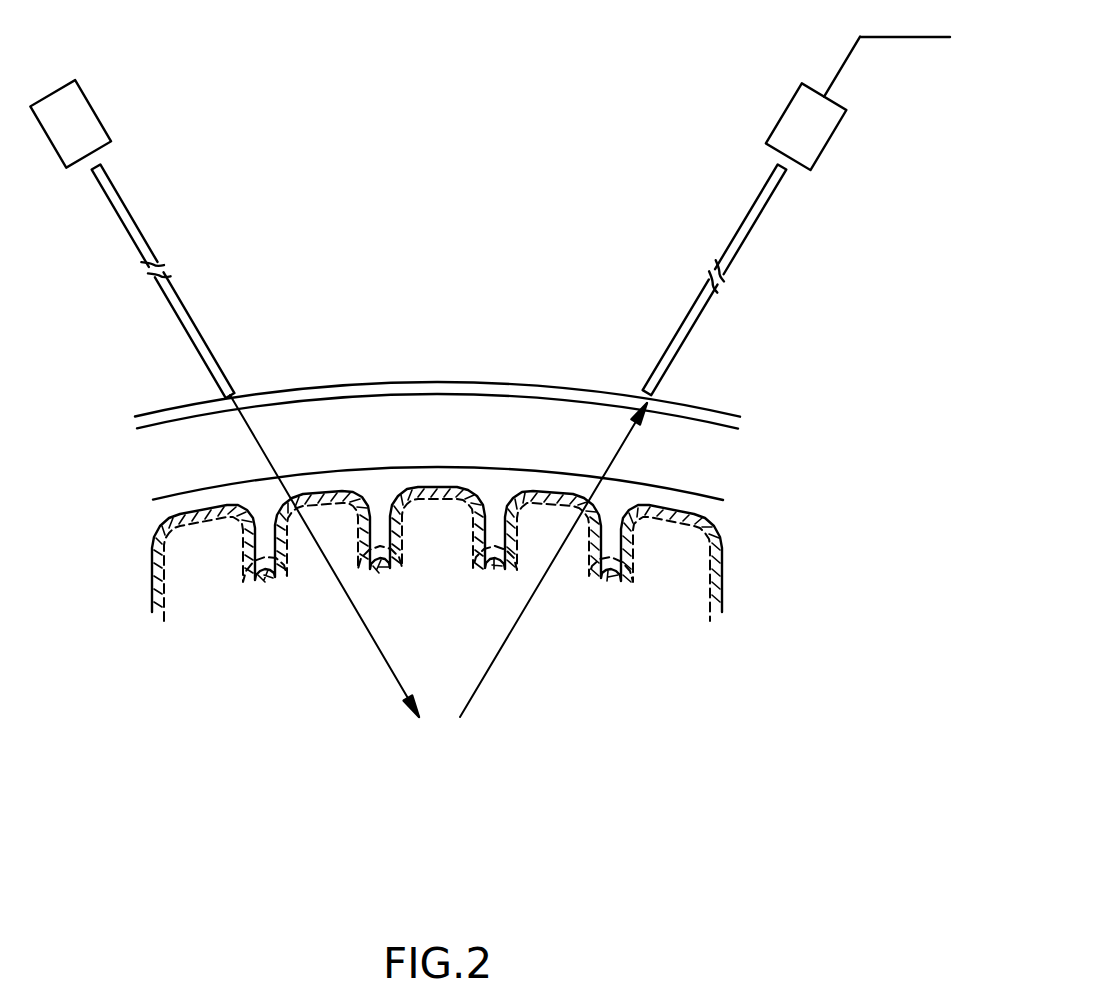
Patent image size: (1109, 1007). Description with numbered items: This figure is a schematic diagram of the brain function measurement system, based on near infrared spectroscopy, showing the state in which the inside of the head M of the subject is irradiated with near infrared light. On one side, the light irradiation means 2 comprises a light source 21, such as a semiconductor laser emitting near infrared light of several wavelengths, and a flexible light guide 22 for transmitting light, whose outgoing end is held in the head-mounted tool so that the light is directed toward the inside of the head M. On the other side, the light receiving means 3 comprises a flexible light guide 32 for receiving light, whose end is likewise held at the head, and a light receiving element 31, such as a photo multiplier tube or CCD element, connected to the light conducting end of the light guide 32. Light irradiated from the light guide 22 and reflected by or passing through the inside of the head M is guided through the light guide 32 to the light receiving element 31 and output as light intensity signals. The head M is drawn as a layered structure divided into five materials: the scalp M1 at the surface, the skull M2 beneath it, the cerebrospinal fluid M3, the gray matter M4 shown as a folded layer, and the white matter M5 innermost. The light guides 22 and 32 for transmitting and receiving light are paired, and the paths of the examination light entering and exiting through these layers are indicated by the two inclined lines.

The light irradiation means 2 is at (205, 222).
The light source 21 is at (93, 112).
The light guide for transmitting light 22 is at (206, 360).
The light receiving means 3 is at (709, 222).
The light receiving element 31 is at (784, 110).
The light guide for receiving light 32 is at (675, 358).
The head M is at (473, 368).
The scalp M1 is at (373, 394).
The skull M2 is at (470, 445).
The cerebrospinal fluid M3 is at (207, 498).
The gray matter M4 is at (723, 553).
The white matter M5 is at (597, 683).